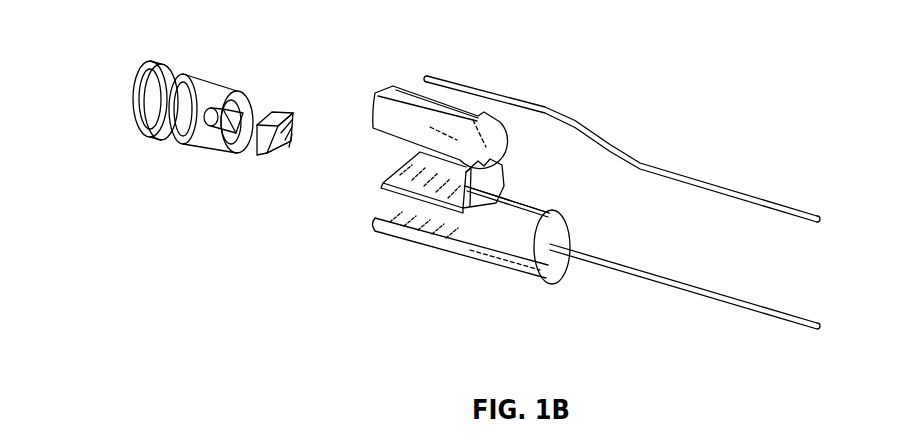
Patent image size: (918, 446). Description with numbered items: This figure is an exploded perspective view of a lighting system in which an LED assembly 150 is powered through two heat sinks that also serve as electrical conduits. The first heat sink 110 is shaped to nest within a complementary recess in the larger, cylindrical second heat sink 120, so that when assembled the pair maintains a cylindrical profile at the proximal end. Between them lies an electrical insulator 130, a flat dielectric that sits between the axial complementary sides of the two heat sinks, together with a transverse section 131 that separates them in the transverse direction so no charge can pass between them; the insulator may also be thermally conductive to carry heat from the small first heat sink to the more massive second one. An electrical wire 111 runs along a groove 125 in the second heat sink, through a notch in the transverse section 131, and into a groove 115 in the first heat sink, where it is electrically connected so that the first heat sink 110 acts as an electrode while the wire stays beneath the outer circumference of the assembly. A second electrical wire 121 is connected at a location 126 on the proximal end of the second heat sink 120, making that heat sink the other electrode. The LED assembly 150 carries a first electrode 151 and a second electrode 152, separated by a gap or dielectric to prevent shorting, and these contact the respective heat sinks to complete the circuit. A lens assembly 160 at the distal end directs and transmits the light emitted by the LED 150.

The first heat sink 110 is at (395, 86).
The electrical wire 111 is at (580, 118).
The groove 115 is at (451, 106).
The second heat sink 120 is at (503, 253).
The second electrical wire 121 is at (717, 303).
The groove 125 is at (548, 212).
The connection location 126 is at (567, 262).
The electrical insulator 130 is at (385, 195).
The transverse section 131 is at (500, 160).
The LED assembly 150 is at (270, 112).
The first electrode 151 is at (282, 154).
The second electrode 152 is at (295, 116).
The lens assembly 160 is at (130, 92).